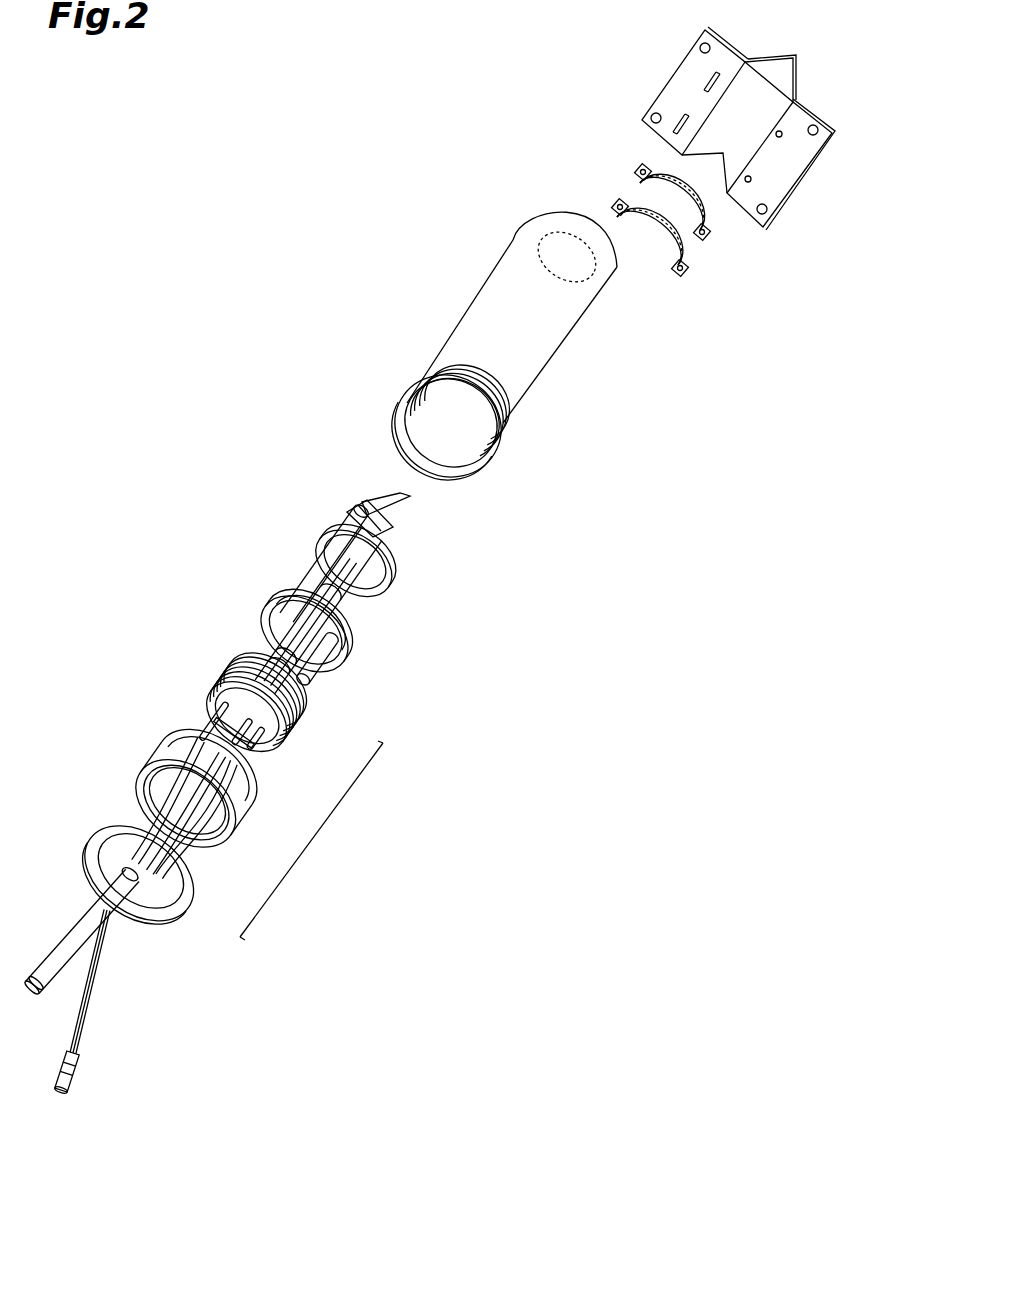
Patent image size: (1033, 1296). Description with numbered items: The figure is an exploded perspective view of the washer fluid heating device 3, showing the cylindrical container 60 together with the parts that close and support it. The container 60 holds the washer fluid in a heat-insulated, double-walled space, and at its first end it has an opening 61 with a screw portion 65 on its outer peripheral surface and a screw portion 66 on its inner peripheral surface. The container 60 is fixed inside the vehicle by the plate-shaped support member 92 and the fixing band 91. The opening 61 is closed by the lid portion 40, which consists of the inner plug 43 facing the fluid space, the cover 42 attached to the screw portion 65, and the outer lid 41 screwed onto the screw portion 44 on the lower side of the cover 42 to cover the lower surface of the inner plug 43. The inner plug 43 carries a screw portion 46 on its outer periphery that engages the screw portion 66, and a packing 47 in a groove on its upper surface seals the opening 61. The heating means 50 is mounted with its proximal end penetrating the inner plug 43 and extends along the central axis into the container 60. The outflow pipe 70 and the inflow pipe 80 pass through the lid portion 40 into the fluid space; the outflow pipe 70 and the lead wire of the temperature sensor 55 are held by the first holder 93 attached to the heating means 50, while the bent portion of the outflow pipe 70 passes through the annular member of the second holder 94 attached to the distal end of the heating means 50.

The washer fluid heating device 3 is at (298, 420).
The lid portion 40 is at (320, 828).
The outer lid 41 is at (138, 875).
The cover 42 is at (185, 804).
The inner plug 43 is at (252, 708).
The screw portion 44 is at (217, 758).
The screw portion 46 is at (260, 696).
The packing 47 is at (316, 618).
The heating means 50 is at (355, 561).
The temperature sensor 55 is at (304, 633).
The container 60 is at (576, 334).
The opening 61 is at (478, 465).
The screw portion 65 is at (503, 418).
The screw portion 66 is at (457, 465).
The outflow pipe 70 is at (315, 597).
The inflow pipe 80 is at (107, 912).
The fixing band 91 is at (686, 271).
The support member 92 is at (826, 120).
The first holder 93 is at (318, 658).
The second holder 94 is at (395, 535).